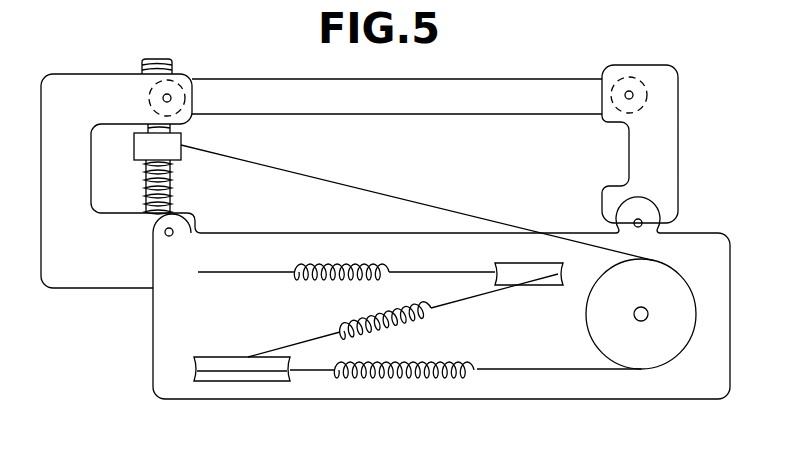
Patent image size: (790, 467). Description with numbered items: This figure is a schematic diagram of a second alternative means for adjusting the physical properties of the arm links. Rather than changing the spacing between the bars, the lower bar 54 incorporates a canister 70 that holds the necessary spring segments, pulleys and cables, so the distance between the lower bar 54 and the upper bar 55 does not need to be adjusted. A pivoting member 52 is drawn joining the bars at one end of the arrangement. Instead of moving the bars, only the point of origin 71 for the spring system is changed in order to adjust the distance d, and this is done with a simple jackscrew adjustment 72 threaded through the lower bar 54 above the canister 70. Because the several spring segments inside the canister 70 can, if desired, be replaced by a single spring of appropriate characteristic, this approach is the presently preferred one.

The pivot arm 52 is at (665, 148).
The lower bar 54 is at (90, 278).
The upper bar 55 is at (467, 102).
The canister 70 is at (167, 353).
The point of origin 71 is at (181, 145).
The jackscrew adjustment 72 is at (172, 200).